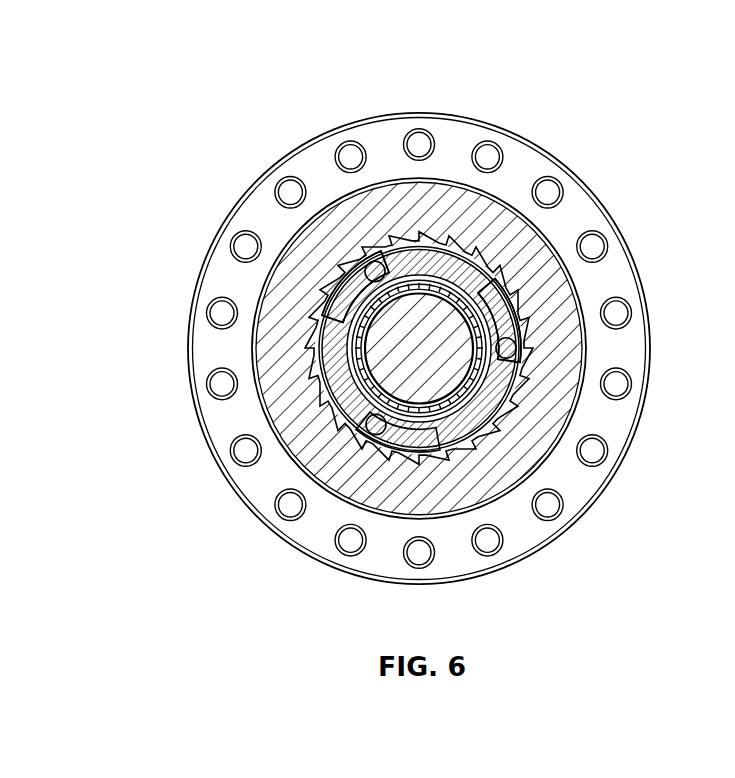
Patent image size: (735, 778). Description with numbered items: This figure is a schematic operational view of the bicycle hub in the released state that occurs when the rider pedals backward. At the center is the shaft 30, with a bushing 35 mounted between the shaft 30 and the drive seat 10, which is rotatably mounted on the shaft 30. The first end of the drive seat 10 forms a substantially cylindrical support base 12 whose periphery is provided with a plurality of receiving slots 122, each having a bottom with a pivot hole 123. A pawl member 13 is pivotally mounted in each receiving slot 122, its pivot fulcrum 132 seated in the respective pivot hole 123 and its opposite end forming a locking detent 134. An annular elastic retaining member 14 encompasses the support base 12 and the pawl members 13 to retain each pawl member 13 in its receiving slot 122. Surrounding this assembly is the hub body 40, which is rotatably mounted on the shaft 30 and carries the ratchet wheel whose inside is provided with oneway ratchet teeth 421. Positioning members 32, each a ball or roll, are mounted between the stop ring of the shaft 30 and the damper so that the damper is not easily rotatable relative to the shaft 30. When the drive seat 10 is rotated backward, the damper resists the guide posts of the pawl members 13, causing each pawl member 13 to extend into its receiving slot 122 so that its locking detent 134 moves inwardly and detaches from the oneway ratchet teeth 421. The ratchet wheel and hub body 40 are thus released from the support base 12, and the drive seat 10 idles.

The hub body 40 is at (521, 163).
The drive seat 10 is at (467, 413).
The retaining member 14 is at (507, 247).
The support base 12 is at (470, 403).
The oneway ratchet teeth 421 is at (330, 313).
The shaft 30 is at (345, 385).
The pawl member 13 is at (347, 272).
The locking detent 134 is at (350, 305).
The pivot fulcrum 132 is at (370, 248).
The pivot hole 123 is at (360, 219).
The positioning member 32 is at (541, 361).
The receiving slot 122 is at (378, 375).
The bushing 35 is at (372, 349).